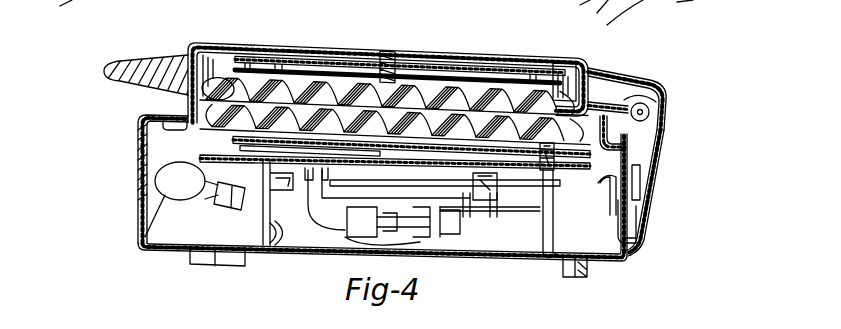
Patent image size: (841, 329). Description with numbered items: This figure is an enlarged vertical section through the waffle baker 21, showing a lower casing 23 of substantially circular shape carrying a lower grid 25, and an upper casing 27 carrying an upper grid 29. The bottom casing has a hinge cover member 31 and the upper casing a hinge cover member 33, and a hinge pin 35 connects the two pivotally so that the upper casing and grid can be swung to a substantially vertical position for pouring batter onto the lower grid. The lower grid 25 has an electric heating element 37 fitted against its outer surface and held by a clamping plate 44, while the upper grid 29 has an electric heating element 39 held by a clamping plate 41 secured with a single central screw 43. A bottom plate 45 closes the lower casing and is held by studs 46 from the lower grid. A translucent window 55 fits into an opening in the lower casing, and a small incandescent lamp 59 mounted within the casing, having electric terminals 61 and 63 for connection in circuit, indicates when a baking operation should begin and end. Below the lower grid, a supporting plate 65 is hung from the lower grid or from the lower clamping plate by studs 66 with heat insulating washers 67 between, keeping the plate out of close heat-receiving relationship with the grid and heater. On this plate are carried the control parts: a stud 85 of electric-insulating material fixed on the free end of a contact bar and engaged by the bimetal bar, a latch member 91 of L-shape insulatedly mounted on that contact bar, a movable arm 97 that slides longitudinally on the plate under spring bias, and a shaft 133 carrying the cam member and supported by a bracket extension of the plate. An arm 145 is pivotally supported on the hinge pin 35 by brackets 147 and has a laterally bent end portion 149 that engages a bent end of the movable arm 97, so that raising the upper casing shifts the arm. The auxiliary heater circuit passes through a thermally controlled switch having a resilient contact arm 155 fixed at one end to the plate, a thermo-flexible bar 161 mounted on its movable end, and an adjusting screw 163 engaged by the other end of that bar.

The waffle baker 21 is at (113, 131).
The lower casing 23 is at (141, 217).
The grid 25 is at (190, 134).
The upper casing 27 is at (293, 33).
The upper grid 29 is at (553, 40).
The hinge cover member 31 is at (657, 157).
The hinge cover member 33 is at (618, 75).
The hinge pin 35 is at (650, 110).
The electric heating element 37 is at (556, 162).
The electric heating element 39 is at (477, 69).
The clamping plate 41 is at (415, 46).
The central screw 43 is at (387, 35).
The clamping plate 44 is at (240, 131).
The bottom plate 45 is at (517, 260).
The studs 46 is at (596, 186).
The translucent window 55 is at (136, 168).
The incandescent lamp 59 is at (141, 243).
The electric terminal 61 is at (207, 200).
The electric terminal 63 is at (244, 212).
The supporting plate 65 is at (437, 232).
The studs 66 is at (467, 217).
The heat insulating washers 67 is at (332, 176).
The stud 85 is at (357, 246).
The latch member 91 is at (322, 230).
The movable arm 97 is at (556, 220).
The shaft 133 is at (300, 190).
The arm 145 is at (643, 185).
The brackets 147 is at (660, 137).
The laterally bent end portion 149 is at (640, 215).
The resilient contact arm 155 is at (368, 184).
The thermo-flexible bar 161 is at (497, 190).
The adjusting screw 163 is at (494, 217).